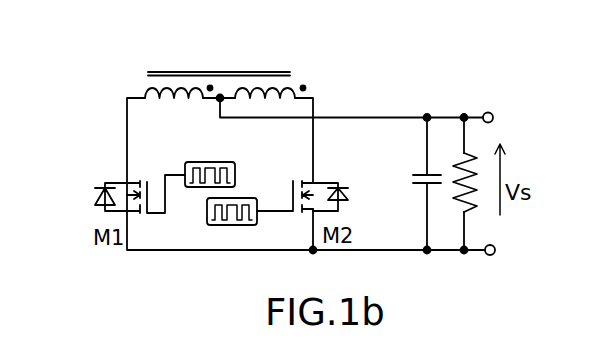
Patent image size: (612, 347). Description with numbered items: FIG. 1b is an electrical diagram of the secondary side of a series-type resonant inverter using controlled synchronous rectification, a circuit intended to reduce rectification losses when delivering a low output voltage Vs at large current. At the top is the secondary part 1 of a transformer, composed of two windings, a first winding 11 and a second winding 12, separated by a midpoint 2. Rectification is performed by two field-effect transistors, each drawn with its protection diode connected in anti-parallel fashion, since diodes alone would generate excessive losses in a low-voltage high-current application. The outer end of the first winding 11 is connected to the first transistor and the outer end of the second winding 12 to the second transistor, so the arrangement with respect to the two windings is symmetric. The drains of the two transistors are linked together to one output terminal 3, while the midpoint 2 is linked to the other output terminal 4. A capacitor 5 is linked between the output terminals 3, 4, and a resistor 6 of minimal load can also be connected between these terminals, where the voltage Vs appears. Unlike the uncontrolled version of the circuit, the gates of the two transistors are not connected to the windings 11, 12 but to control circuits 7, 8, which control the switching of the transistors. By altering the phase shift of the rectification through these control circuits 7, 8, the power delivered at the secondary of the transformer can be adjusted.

The secondary part of the transformer 1 is at (233, 72).
The first winding 11 is at (146, 90).
The second winding 12 is at (294, 86).
The midpoint 2 is at (218, 101).
The control circuit 7 is at (236, 162).
The control circuit 8 is at (258, 198).
The capacitor 5 is at (413, 176).
The resistor of minimal load 6 is at (478, 157).
The output terminal 4 is at (493, 113).
The output terminal 3 is at (496, 253).